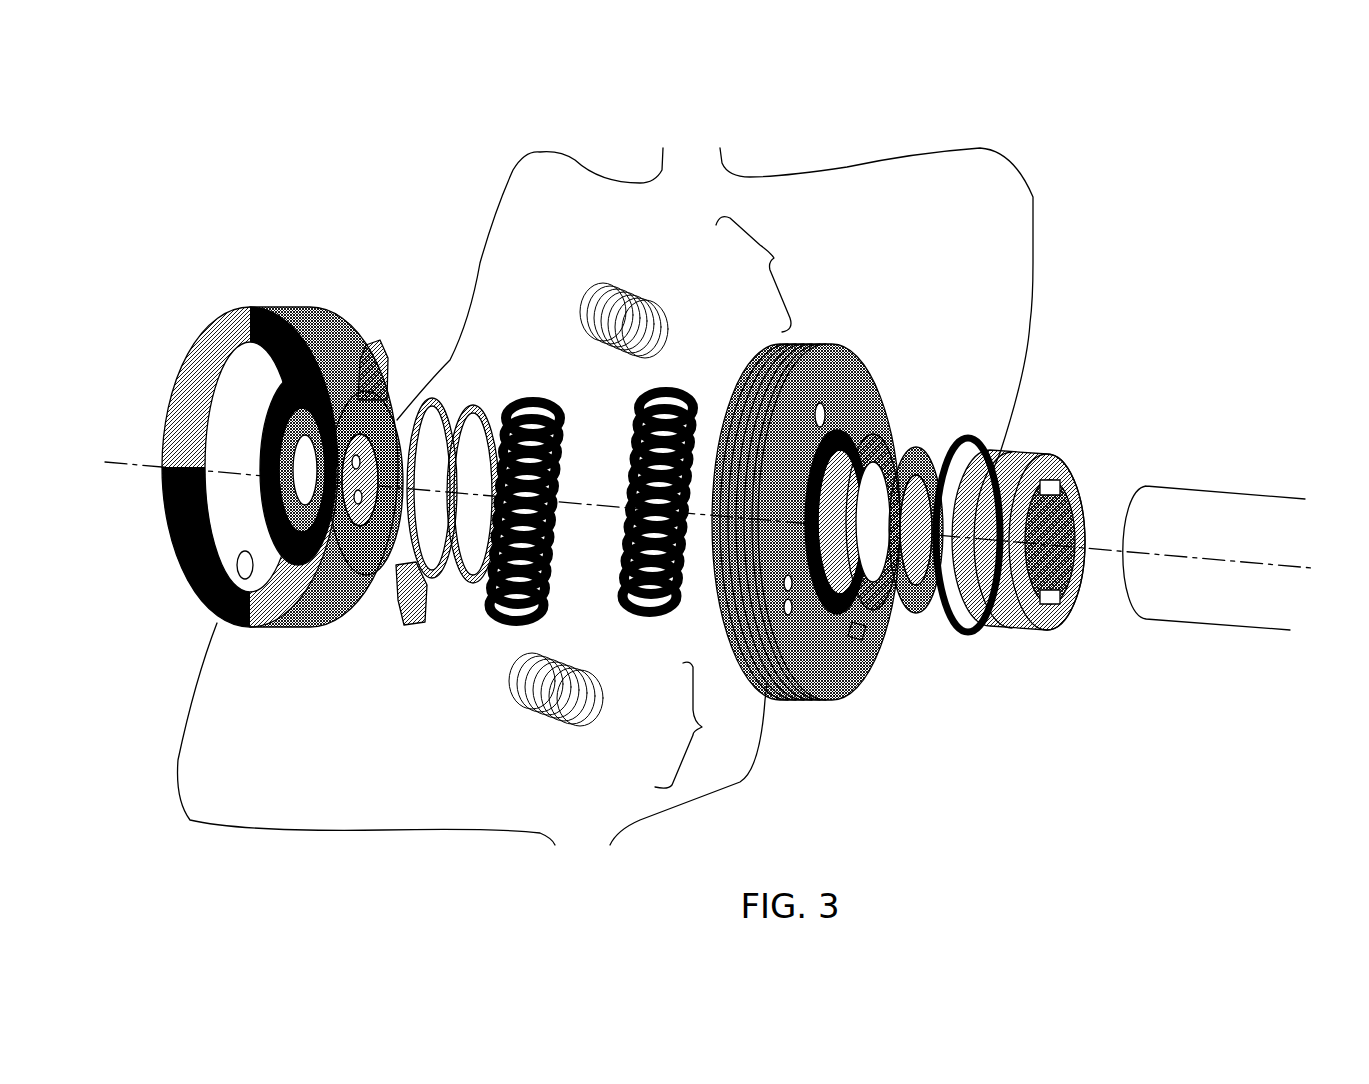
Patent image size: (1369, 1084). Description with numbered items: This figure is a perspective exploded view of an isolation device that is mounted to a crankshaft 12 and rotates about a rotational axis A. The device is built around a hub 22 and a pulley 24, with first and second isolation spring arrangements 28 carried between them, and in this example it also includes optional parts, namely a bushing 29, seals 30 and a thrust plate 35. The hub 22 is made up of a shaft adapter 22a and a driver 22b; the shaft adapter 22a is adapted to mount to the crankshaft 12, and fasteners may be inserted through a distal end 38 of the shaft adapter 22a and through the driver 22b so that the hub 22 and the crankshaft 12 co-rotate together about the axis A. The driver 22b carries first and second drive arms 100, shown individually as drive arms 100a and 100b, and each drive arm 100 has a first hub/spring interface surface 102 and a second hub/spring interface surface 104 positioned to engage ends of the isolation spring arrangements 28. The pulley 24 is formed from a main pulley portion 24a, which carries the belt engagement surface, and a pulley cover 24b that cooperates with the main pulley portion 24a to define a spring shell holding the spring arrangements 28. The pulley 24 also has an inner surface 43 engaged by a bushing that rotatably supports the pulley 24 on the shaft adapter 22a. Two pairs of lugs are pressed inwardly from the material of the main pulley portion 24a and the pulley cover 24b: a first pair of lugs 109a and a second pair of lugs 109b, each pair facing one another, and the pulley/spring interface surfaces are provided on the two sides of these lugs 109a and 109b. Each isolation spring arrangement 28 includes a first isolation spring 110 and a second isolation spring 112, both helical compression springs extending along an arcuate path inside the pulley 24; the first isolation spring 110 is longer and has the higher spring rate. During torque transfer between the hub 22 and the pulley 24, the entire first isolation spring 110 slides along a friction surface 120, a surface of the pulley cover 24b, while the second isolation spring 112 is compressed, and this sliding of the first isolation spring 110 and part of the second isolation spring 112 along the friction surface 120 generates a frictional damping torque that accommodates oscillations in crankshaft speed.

The crankshaft 12 is at (1186, 609).
The rotational axis A is at (1197, 559).
The hub 22 is at (715, 253).
The shaft adapter 22a is at (717, 125).
The driver 22b is at (660, 125).
The pulley 24 is at (473, 793).
The main pulley portion 24a is at (599, 873).
The pulley cover 24b is at (548, 873).
The isolation spring arrangement 28 is at (731, 503).
The bushing 29 is at (897, 457).
The seal 30 is at (453, 410).
The thrust plate 35 is at (293, 390).
The distal end 38 is at (967, 480).
The inner surface 43 is at (837, 553).
The drive arm 100 is at (356, 425).
The first drive arm 100a is at (412, 628).
The second drive arm 100b is at (372, 372).
The first hub/spring interface surface 102 is at (357, 390).
The second hub/spring interface surface 104 is at (375, 383).
The first pair of lugs 109a is at (247, 567).
The second pair of lugs 109b is at (815, 417).
The first isolation spring 110 is at (693, 437).
The second isolation spring 112 is at (647, 300).
The friction surface 120 is at (287, 370).